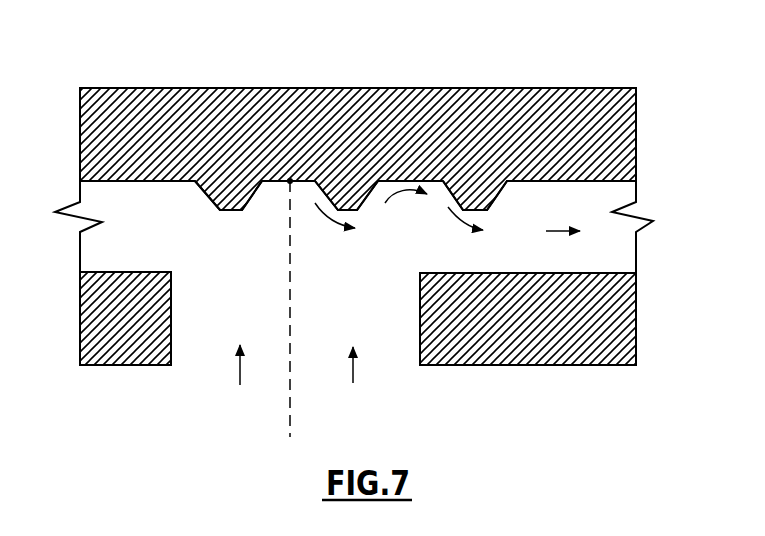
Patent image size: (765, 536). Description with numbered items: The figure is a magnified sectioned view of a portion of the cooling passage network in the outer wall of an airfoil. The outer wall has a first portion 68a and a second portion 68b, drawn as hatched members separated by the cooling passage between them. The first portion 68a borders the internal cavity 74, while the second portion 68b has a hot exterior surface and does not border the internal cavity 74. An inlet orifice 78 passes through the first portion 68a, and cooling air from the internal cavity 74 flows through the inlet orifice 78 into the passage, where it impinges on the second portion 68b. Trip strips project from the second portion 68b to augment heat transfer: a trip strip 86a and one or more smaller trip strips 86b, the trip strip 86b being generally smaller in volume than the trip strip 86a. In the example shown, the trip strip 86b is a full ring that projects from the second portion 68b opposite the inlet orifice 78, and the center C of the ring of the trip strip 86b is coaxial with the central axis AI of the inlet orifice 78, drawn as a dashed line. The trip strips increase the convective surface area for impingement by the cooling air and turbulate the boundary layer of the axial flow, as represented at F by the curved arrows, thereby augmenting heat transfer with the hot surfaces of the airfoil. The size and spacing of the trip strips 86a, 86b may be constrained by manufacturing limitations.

The first portion of the outer wall 68a is at (525, 365).
The second portion of the outer wall 68b is at (511, 88).
The trip strip 86a is at (495, 200).
The trip strip 86b is at (209, 201).
The inlet orifice 78 is at (171, 343).
The internal cavity 74 is at (491, 412).
The center of the ring of the trip strip C is at (292, 183).
The turbulated flow F is at (468, 223).
The central axis of the inlet orifice AI is at (290, 406).